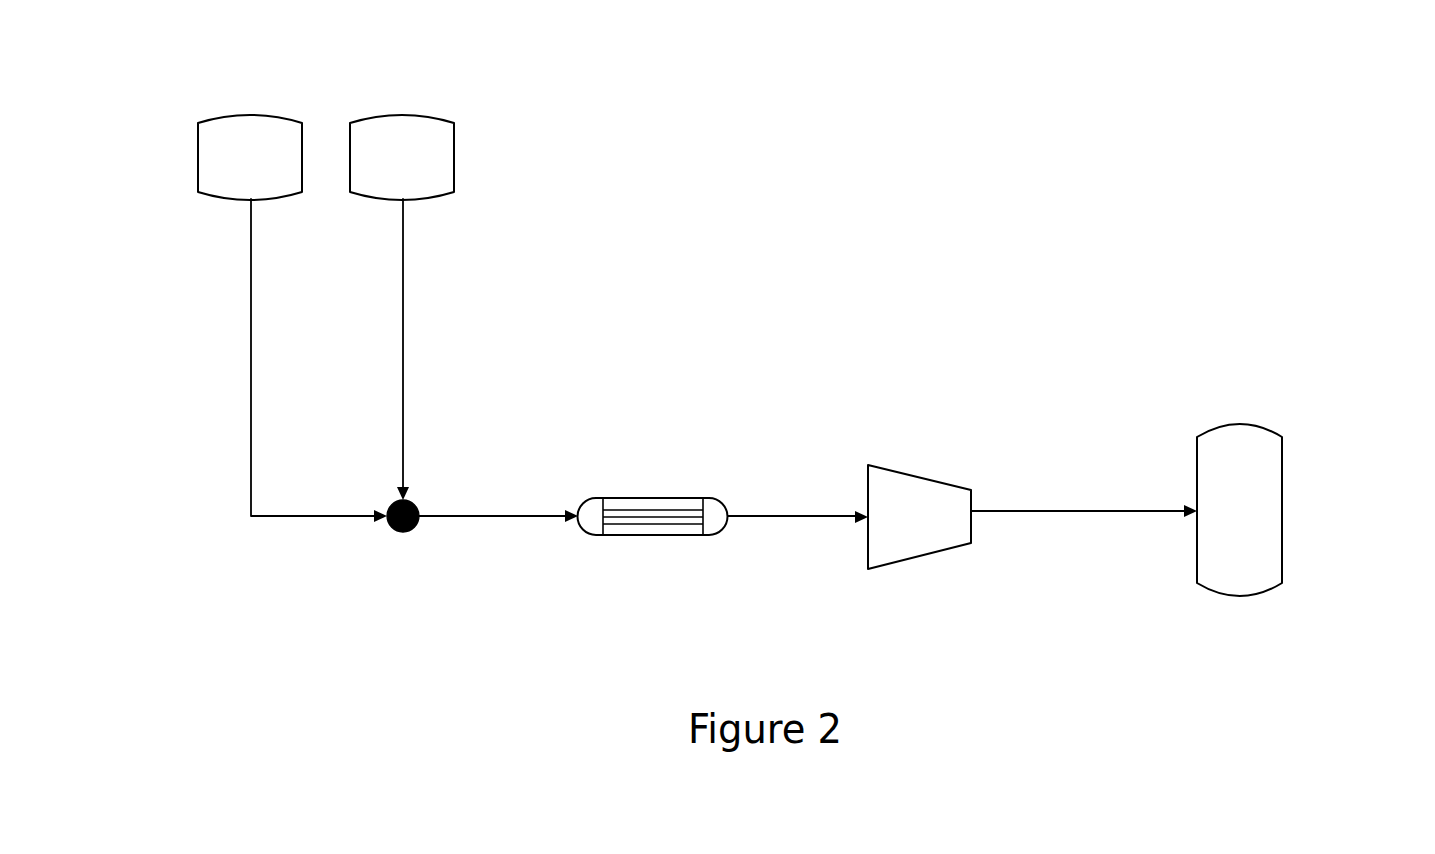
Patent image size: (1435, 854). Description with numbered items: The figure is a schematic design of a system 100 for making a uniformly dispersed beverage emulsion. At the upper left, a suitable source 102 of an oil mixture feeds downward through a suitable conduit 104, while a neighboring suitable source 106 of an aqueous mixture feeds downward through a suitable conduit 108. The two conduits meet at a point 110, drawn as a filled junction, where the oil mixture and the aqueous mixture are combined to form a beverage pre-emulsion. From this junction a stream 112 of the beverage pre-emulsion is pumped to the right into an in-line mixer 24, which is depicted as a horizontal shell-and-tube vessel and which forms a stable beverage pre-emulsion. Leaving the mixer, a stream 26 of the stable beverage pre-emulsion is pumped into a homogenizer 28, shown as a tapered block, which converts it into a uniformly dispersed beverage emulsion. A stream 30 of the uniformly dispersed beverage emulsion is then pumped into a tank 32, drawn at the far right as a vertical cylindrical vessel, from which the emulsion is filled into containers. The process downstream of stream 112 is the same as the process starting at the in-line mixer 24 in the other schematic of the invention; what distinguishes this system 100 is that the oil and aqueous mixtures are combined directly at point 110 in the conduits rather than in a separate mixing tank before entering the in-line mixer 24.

The system 100 is at (745, 146).
The source of an oil mixture 102 is at (198, 167).
The conduit 104 is at (251, 290).
The source of an aqueous mixture 106 is at (454, 167).
The conduit 108 is at (403, 290).
The point 110 is at (417, 505).
The stream of the beverage pre-emulsion 112 is at (490, 516).
The in-line mixer 24 is at (648, 498).
The stream of the stable beverage pre-emulsion 26 is at (787, 516).
The homogenizer 28 is at (938, 475).
The stream of the uniformly dispersed beverage emulsion 30 is at (1073, 511).
The tank 32 is at (1282, 498).